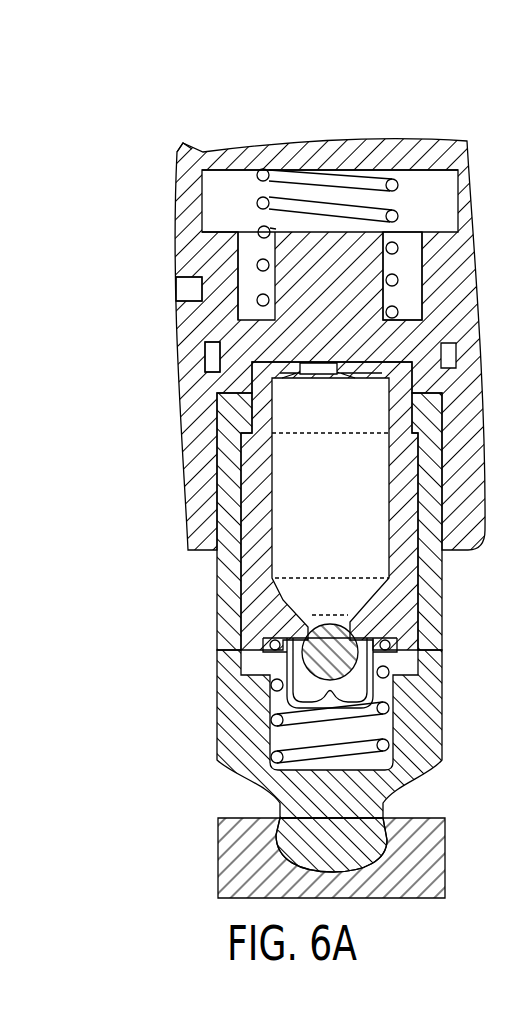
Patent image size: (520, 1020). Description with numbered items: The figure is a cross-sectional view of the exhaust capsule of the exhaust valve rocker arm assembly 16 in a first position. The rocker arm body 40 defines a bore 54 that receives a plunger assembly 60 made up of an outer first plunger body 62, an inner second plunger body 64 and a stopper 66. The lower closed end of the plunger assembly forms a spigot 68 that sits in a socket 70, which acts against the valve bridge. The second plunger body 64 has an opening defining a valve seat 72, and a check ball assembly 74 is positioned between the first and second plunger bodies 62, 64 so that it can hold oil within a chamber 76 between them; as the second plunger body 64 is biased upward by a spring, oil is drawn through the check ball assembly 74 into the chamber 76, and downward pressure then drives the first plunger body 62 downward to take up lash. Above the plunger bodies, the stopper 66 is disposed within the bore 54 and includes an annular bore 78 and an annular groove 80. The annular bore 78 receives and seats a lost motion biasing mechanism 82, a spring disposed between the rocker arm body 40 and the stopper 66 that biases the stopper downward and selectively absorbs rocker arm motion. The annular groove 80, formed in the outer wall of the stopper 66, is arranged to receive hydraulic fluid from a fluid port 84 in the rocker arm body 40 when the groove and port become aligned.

The exhaust valve rocker arm assembly 16 is at (140, 114).
The rocker arm body 40 is at (198, 150).
The bore 54 is at (432, 163).
The plunger assembly 60 is at (198, 594).
The first plunger body 62 is at (226, 640).
The second plunger body 64 is at (424, 606).
The stopper 66 is at (200, 326).
The spigot 68 is at (352, 848).
The socket 70 is at (432, 846).
The valve seat 72 is at (298, 614).
The check ball assembly 74 is at (392, 664).
The chamber 76 is at (240, 698).
The annular bore 78 is at (438, 272).
The annular groove 80 is at (200, 388).
The lost motion biasing mechanism 82 is at (398, 216).
The fluid port 84 is at (190, 293).